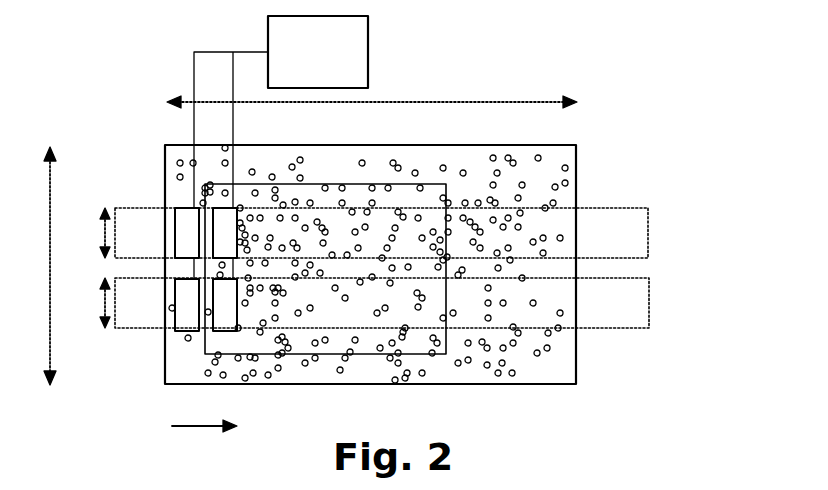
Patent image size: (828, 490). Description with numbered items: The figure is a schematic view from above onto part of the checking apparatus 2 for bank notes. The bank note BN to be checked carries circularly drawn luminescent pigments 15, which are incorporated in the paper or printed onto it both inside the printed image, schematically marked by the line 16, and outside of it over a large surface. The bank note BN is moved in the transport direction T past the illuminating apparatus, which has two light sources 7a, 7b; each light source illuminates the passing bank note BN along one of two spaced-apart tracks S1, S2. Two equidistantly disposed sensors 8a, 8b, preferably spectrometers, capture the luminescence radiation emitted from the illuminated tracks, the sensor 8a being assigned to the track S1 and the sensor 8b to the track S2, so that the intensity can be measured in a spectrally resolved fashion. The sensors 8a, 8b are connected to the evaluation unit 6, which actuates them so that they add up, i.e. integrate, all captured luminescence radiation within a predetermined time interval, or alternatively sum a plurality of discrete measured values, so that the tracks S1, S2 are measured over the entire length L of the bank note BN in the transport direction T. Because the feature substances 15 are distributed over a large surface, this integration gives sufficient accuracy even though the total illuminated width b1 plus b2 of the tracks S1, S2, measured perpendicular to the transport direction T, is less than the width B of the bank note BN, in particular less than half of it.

The checking apparatus 2 is at (156, 40).
The evaluation unit 6 is at (366, 47).
The light source 7a is at (185, 208).
The light source 7b is at (183, 333).
The sensor 8a is at (216, 197).
The sensor 8b is at (216, 333).
The pigments 15 is at (509, 165).
The line marking the printed image 16 is at (345, 185).
The bank note BN is at (577, 195).
The track S1 is at (568, 228).
The track S2 is at (568, 310).
The length of the bank note L is at (372, 90).
The width of the bank note B is at (36, 266).
The width of track S1 b1 is at (91, 233).
The width of track S2 b2 is at (91, 303).
The transport direction T is at (204, 440).